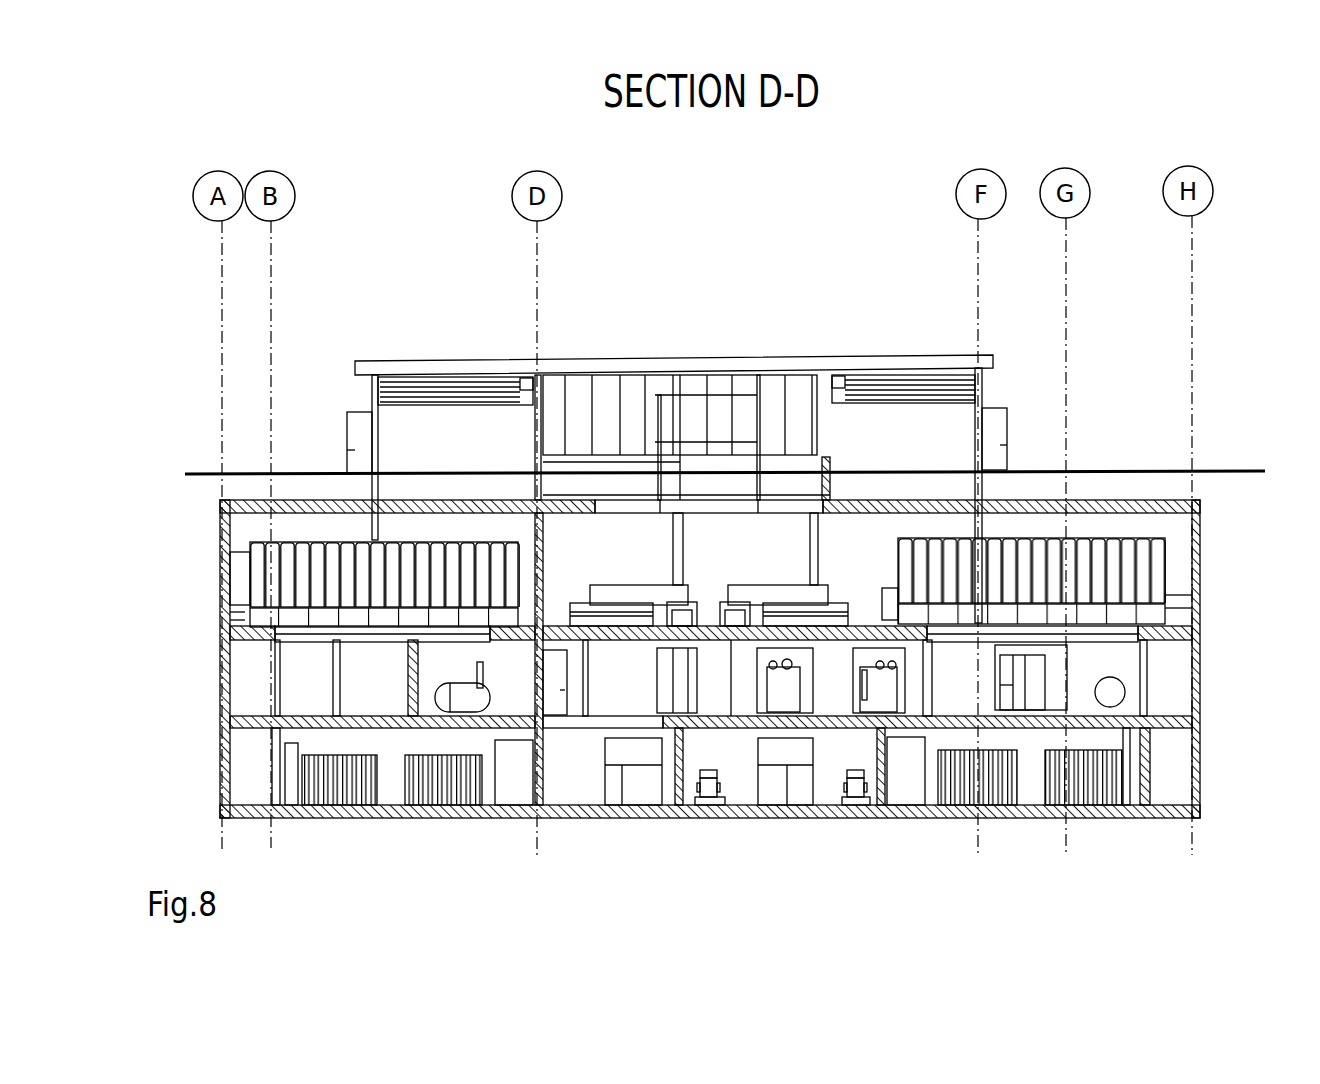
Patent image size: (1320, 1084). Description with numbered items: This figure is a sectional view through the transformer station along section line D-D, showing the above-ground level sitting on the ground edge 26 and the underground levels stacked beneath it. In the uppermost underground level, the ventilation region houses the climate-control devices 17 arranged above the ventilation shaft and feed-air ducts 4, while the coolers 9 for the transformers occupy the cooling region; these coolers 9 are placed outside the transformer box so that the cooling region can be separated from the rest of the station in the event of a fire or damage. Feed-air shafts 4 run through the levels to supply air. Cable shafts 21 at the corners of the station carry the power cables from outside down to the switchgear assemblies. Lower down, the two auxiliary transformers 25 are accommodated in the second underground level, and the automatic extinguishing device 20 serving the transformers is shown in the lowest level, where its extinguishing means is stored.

The climate-control devices 17 is at (265, 575).
The coolers 9 is at (1155, 570).
The feed-air shafts 4 is at (297, 673).
The cable shafts 21 is at (250, 770).
The automatic extinguishing device 20 is at (440, 787).
The auxiliary transformers 25 is at (877, 688).
The ground edge 26 is at (1205, 468).